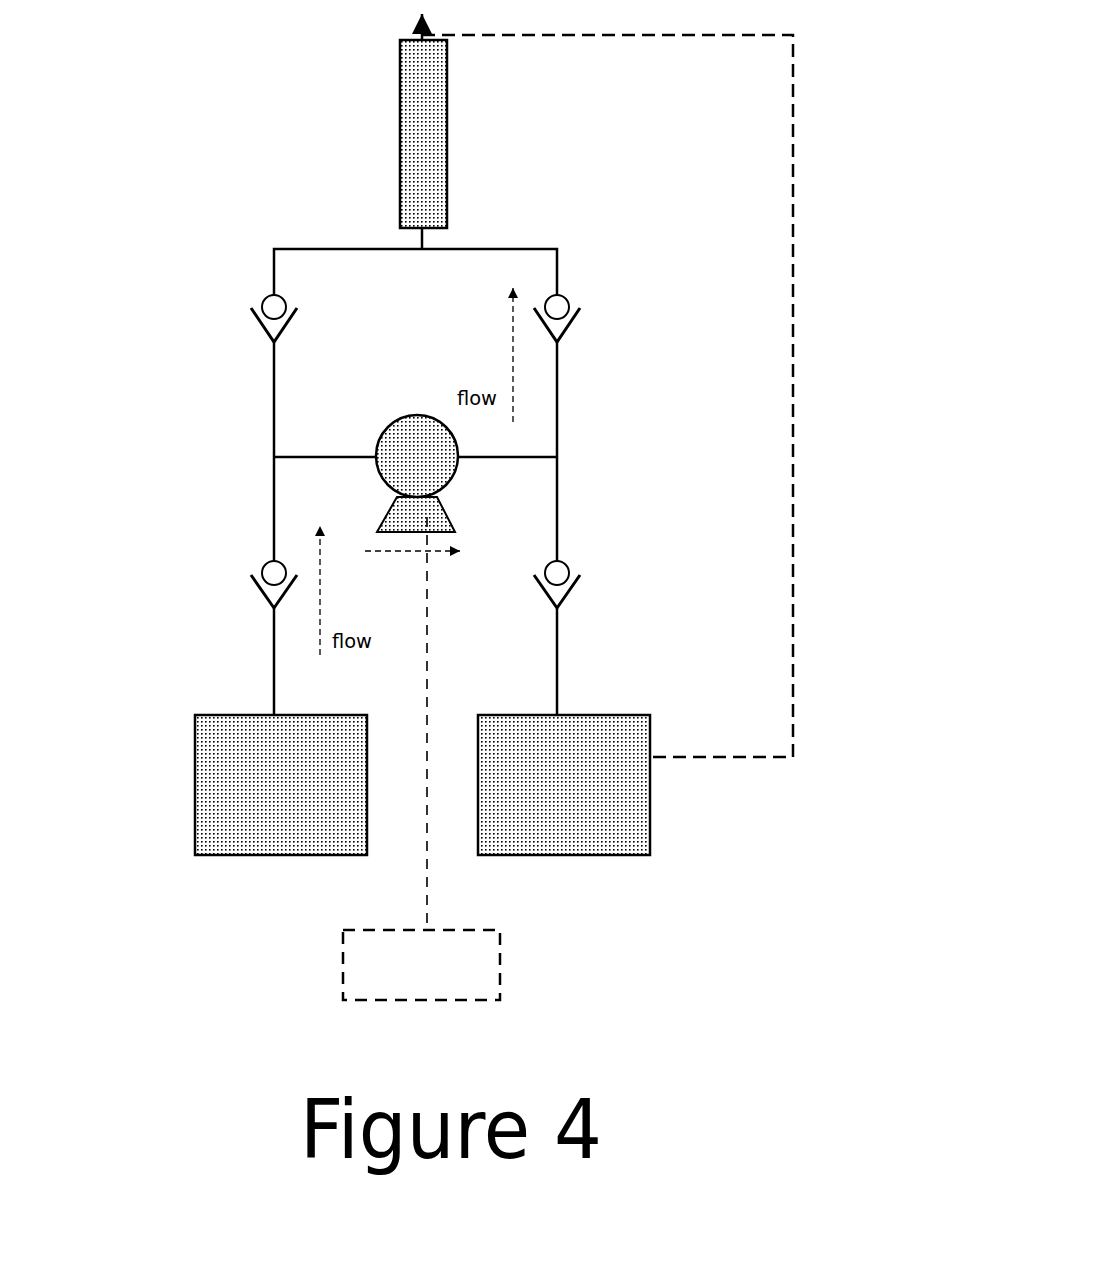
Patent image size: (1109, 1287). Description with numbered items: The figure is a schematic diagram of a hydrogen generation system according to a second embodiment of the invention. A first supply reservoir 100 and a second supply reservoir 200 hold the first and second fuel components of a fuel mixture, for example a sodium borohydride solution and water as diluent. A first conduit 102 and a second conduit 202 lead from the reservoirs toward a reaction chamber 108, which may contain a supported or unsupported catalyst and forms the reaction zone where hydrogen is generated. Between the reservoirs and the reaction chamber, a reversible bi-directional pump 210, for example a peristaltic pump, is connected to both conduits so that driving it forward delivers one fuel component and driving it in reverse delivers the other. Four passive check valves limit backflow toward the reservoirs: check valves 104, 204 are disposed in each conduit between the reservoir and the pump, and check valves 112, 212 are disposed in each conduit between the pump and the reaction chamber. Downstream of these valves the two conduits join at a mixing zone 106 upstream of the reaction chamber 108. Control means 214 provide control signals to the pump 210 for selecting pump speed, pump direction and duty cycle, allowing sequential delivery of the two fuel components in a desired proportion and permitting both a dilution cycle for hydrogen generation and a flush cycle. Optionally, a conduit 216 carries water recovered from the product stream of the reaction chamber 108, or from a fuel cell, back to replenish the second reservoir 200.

The first supply reservoir 100 is at (191, 787).
The first conduit 102 is at (268, 484).
The check valve 104 is at (253, 586).
The mixing zone 106 is at (407, 246).
The reaction chamber 108 is at (451, 136).
The check valve 112 is at (253, 333).
The second supply reservoir 200 is at (655, 790).
The second conduit 202 is at (566, 507).
The check valve 204 is at (586, 602).
The reversible pump 210 is at (428, 407).
The check valve 212 is at (584, 321).
The control means 214 is at (352, 987).
The conduit for recovered water 216 is at (798, 719).